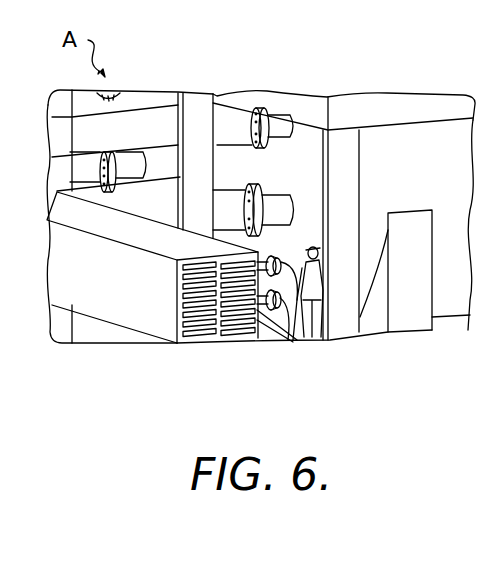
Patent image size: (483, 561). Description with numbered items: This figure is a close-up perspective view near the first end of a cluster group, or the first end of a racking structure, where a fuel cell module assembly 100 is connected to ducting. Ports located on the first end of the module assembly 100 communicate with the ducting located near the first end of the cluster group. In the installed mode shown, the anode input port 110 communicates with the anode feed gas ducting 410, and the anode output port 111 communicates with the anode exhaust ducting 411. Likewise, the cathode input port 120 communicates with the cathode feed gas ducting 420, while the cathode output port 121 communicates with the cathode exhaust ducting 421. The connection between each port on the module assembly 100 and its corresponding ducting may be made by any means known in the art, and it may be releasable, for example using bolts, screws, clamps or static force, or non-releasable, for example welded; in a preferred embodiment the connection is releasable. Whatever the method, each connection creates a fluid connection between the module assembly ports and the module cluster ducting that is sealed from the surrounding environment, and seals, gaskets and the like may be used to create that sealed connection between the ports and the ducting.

The module assembly 100 is at (410, 150).
The anode input port 110 is at (295, 343).
The anode output port 111 is at (280, 346).
The cathode input port 120 is at (278, 120).
The cathode output port 121 is at (283, 205).
The anode feed gas ducting 410 is at (260, 284).
The anode exhaust ducting 411 is at (270, 340).
The cathode feed gas ducting 420 is at (232, 112).
The cathode exhaust ducting 421 is at (228, 185).